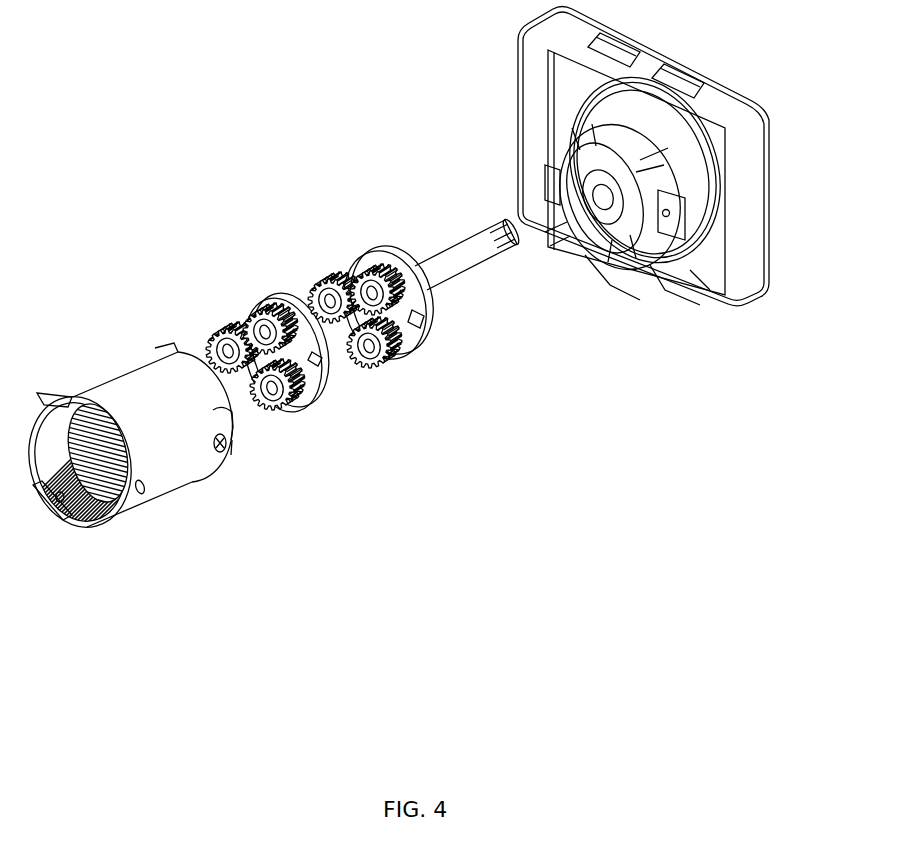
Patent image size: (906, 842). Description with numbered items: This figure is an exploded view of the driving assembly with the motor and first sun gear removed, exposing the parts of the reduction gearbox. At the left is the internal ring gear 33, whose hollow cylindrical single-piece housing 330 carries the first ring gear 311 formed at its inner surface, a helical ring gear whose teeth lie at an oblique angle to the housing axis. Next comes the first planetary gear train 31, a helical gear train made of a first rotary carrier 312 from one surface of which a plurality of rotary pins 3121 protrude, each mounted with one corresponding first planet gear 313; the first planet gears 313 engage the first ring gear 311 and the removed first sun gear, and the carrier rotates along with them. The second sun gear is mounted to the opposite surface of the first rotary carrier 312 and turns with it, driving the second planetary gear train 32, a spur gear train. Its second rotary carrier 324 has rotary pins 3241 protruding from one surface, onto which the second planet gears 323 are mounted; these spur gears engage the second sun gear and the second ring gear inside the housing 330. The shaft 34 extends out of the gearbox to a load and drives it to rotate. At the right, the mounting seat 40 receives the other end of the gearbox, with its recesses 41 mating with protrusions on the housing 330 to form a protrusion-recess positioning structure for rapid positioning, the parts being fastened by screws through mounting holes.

The first planetary gear train 31 is at (319, 417).
The first ring gear 311 is at (128, 518).
The first rotary carrier 312 is at (305, 404).
The rotary pins 3121 is at (267, 413).
The first planet gears 313 is at (300, 415).
The second planetary gear train 32 is at (377, 306).
The second planet gears 323 is at (414, 340).
The rotary pins 3241 is at (385, 364).
The second rotary carrier 324 is at (427, 327).
The internal ring gear 33 is at (135, 428).
The housing 330 is at (110, 373).
The shaft 34 is at (463, 257).
The mounting seat 40 is at (747, 242).
The recesses 41 is at (667, 245).